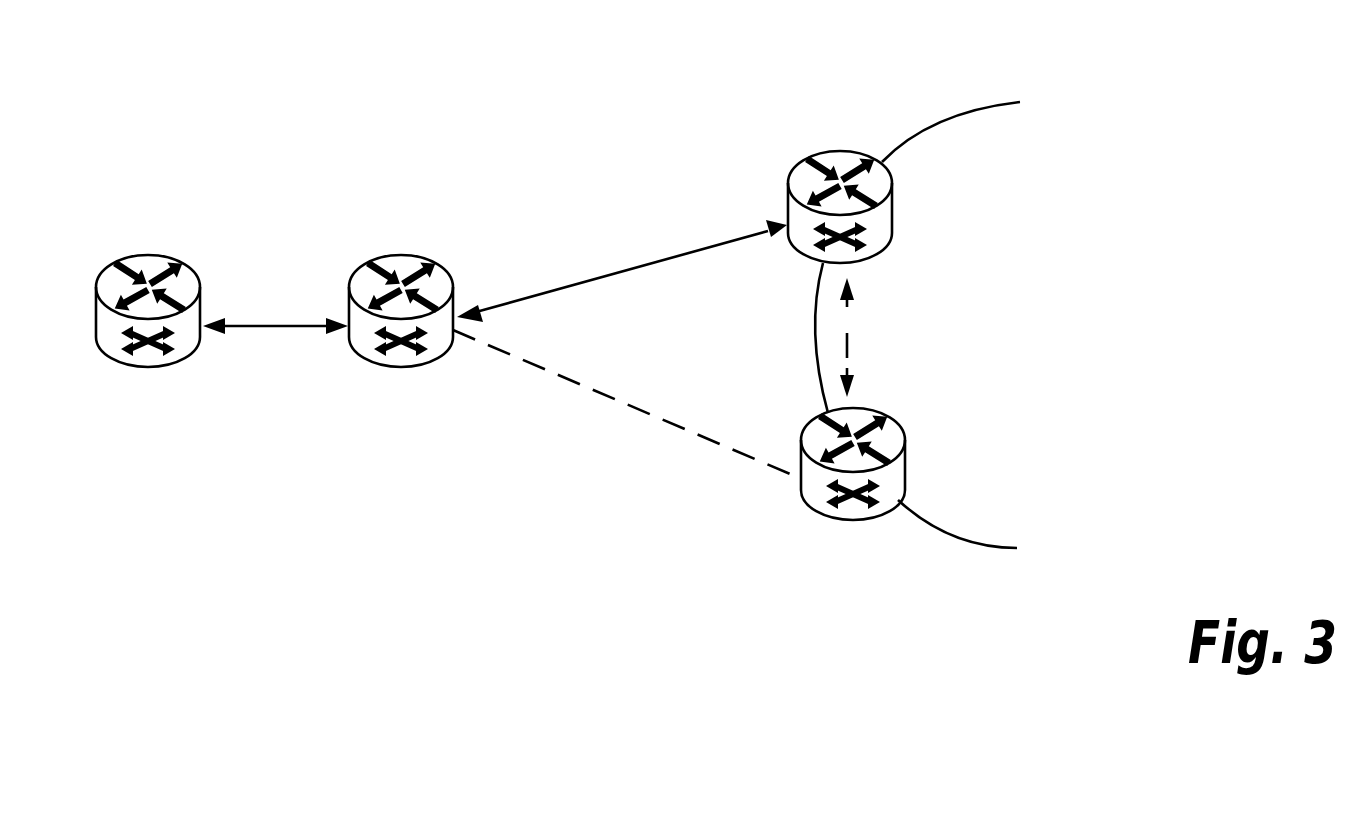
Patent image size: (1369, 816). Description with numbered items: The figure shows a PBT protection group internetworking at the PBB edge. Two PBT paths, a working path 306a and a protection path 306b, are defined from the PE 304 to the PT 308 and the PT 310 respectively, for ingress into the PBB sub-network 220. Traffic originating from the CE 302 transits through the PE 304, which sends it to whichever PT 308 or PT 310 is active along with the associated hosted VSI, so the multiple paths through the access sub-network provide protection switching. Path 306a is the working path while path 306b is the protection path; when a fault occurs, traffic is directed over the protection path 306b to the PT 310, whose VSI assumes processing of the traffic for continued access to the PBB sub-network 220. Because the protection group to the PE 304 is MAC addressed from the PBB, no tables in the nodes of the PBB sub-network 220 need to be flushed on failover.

The CE 302 is at (150, 256).
The PE 304 is at (392, 256).
The working path 306a is at (620, 276).
The protection path 306b is at (642, 410).
The PT 308 is at (801, 163).
The PT 310 is at (812, 420).
The PBB sub-network 220 is at (990, 100).